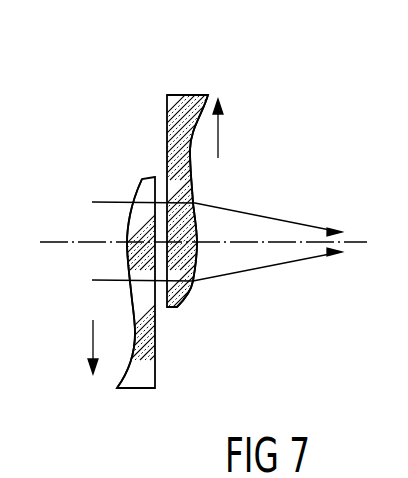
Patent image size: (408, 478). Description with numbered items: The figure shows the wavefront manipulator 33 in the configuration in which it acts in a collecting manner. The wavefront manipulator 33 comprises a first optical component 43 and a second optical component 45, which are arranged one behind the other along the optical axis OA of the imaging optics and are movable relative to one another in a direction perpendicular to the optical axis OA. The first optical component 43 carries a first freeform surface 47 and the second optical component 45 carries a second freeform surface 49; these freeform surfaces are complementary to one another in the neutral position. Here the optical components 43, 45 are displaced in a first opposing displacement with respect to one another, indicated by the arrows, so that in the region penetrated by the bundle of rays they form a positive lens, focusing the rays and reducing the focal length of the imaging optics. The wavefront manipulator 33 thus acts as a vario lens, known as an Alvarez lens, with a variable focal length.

The wavefront manipulator 33 is at (240, 85).
The first optical component 43 is at (140, 389).
The second optical component 45 is at (180, 94).
The first freeform surface 47 is at (131, 294).
The second freeform surface 49 is at (191, 173).
The optical axis OA is at (46, 242).